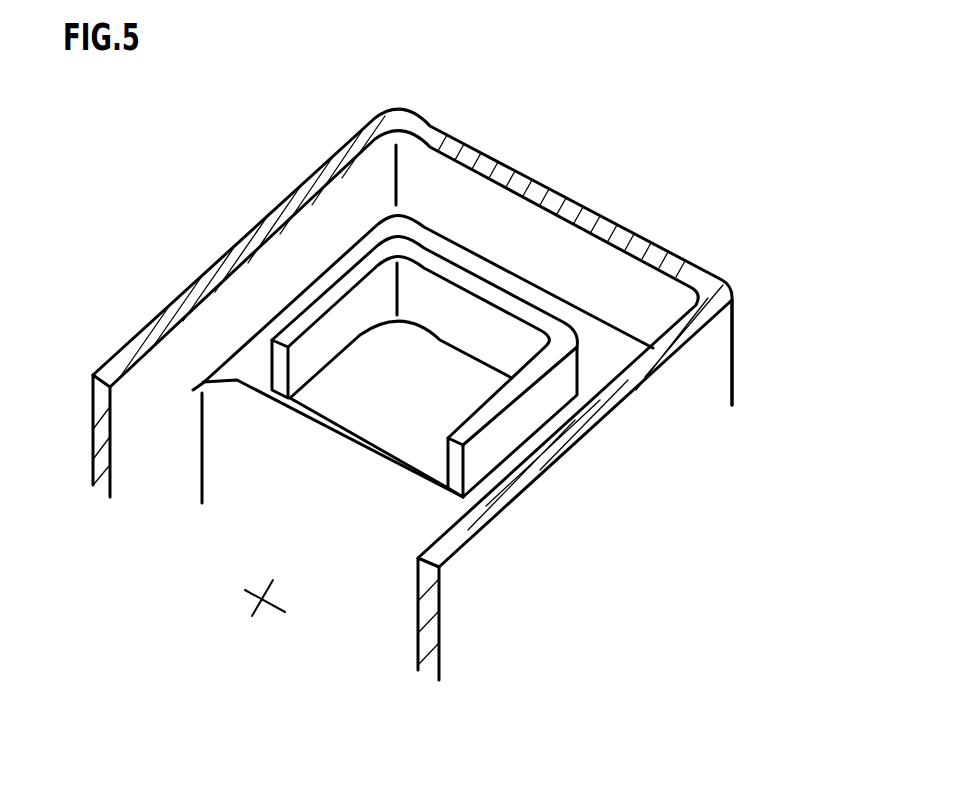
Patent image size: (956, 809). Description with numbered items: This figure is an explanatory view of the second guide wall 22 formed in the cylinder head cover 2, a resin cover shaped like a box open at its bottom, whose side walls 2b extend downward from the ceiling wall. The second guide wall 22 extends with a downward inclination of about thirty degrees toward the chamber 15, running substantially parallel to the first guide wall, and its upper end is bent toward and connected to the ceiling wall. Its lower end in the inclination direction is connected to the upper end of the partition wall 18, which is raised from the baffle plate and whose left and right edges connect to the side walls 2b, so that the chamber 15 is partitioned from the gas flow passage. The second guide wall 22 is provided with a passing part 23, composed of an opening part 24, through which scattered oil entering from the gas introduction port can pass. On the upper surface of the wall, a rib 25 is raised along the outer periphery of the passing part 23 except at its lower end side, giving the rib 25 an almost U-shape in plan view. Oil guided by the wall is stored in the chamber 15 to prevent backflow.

The cylinder head cover 2 is at (474, 137).
The side wall 2b is at (157, 318).
The chamber 15 is at (262, 598).
The partition wall 18 is at (233, 448).
The second guide wall 22 is at (605, 350).
The passing part 23 is at (327, 315).
The opening part 24 is at (333, 427).
The rib 25 is at (354, 272).